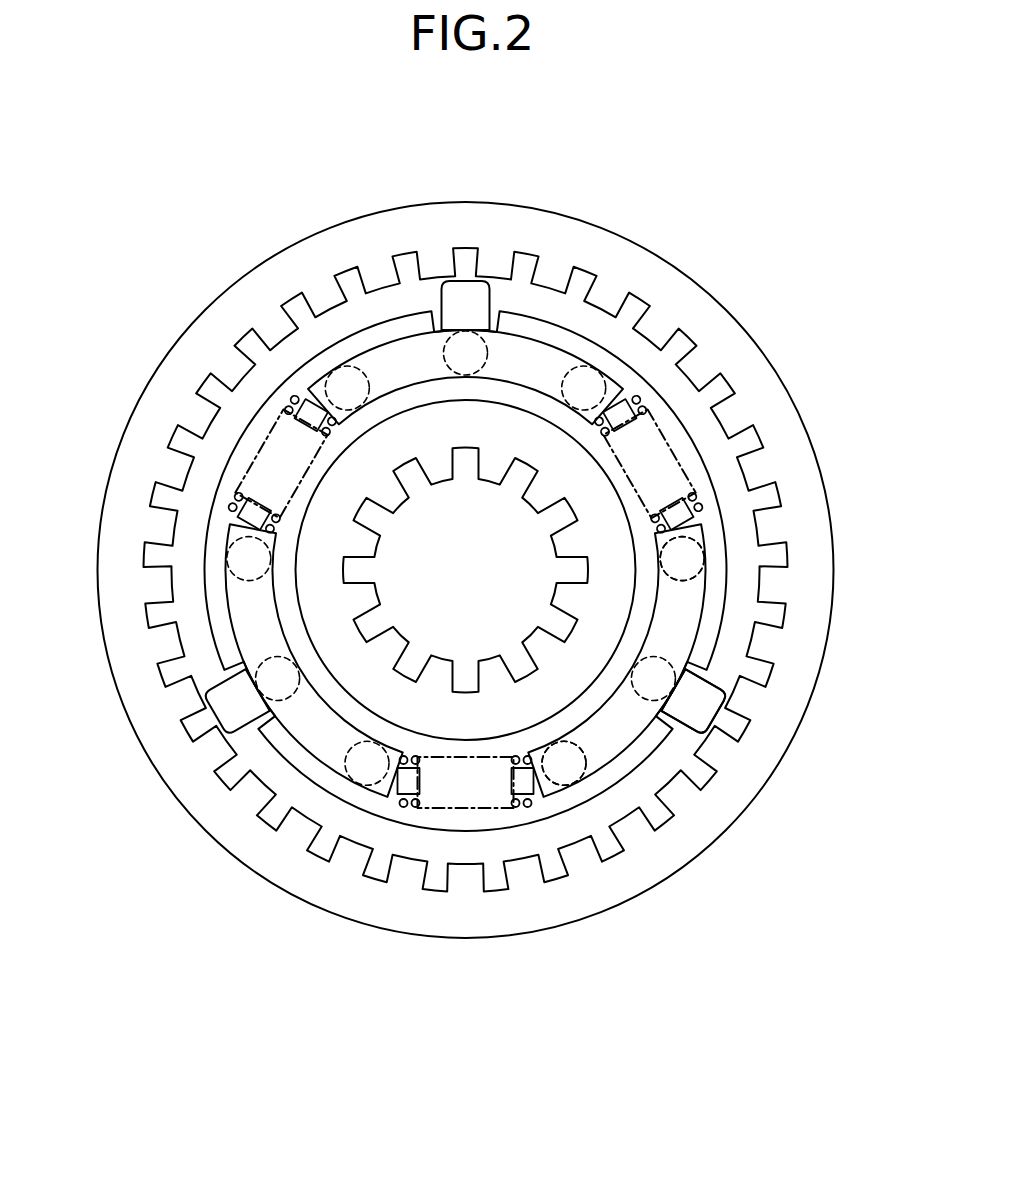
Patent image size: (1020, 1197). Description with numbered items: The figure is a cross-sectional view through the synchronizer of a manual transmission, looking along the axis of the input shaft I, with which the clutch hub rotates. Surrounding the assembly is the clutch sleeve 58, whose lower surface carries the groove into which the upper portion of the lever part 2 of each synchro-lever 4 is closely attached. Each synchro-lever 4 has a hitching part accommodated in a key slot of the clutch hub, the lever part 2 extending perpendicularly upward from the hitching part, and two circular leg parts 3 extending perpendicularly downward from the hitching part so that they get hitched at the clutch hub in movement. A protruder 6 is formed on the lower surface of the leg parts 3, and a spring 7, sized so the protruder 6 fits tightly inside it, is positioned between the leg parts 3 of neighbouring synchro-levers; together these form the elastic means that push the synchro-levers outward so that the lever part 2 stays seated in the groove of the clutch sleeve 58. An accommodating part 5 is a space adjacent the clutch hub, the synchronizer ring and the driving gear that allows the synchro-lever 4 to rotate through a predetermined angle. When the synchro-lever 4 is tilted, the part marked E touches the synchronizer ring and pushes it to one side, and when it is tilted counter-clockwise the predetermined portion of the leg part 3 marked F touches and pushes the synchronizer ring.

The lever part 2 is at (452, 307).
The leg part 3 is at (547, 363).
The synchro-lever 4 is at (530, 330).
The accommodating part 5 is at (288, 596).
The protruder 6 is at (405, 778).
The spring 7 is at (420, 797).
The clutch sleeve 58 is at (708, 820).
The input shaft I is at (442, 588).
The predetermined portion of the leg part F is at (700, 560).
The touching part of the synchro-lever E is at (675, 688).